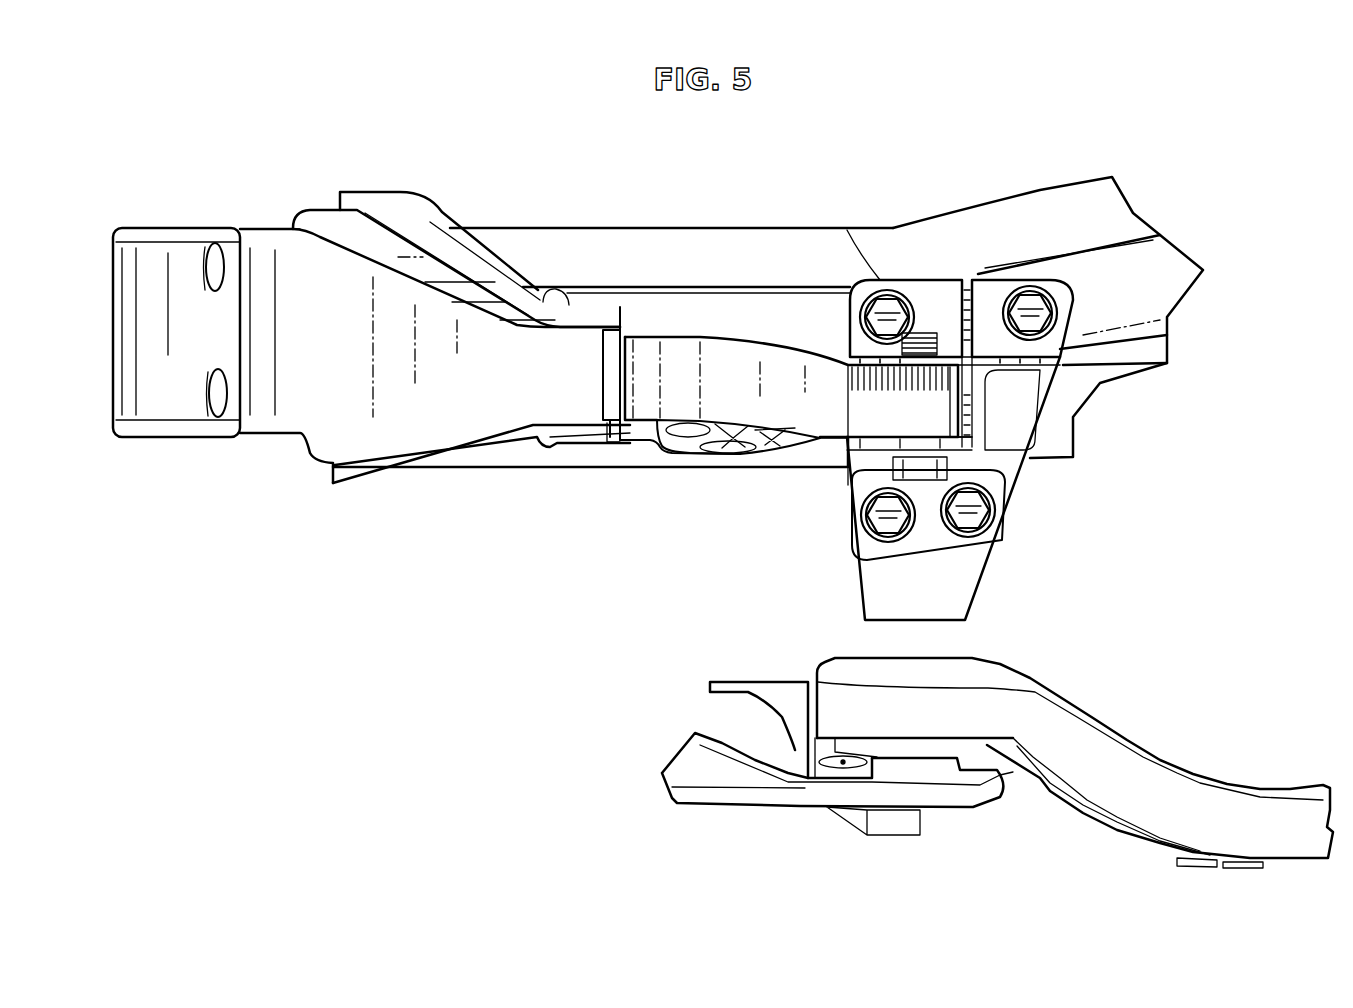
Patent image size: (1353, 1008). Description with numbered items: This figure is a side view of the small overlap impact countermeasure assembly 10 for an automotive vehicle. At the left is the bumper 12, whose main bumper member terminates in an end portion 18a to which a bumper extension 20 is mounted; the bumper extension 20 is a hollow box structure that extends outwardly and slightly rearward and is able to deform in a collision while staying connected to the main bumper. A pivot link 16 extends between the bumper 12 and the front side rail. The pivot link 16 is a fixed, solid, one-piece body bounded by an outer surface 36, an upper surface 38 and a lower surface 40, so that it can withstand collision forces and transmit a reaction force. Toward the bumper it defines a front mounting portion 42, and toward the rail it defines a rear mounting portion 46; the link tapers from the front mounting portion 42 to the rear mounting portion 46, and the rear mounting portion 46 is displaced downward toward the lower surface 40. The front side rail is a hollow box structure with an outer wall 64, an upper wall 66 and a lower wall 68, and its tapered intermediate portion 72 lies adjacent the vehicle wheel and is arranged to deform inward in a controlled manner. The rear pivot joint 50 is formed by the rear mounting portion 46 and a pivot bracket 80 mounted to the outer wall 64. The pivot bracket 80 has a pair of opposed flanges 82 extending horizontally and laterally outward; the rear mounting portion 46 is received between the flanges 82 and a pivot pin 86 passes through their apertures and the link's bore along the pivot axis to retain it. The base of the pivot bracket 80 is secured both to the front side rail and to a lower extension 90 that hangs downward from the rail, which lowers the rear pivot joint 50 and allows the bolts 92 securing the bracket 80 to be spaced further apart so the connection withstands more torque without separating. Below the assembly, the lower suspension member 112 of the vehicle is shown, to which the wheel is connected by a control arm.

The countermeasure assembly 10 is at (392, 102).
The bumper 12 is at (200, 185).
The pivot link 16 is at (697, 518).
The end portion of the main bumper 18a is at (155, 278).
The bumper extension 20 is at (432, 400).
The outer surface 36 is at (677, 455).
The upper surface 38 is at (738, 335).
The lower surface 40 is at (708, 455).
The front mounting portion 42 is at (578, 272).
The rear mounting portion 46 is at (887, 415).
The rear pivot joint 50 is at (933, 172).
The outer wall 64 is at (630, 256).
The upper wall 66 is at (518, 242).
The lower wall 68 is at (490, 470).
The intermediate portion 72 is at (1118, 290).
The pivot bracket 80 is at (1042, 486).
The opposed flanges 82 is at (850, 345).
The pivot pin 86 is at (927, 330).
The lower extension 90 is at (935, 596).
The bolts 92 is at (885, 303).
The lower suspension member 112 is at (1133, 780).